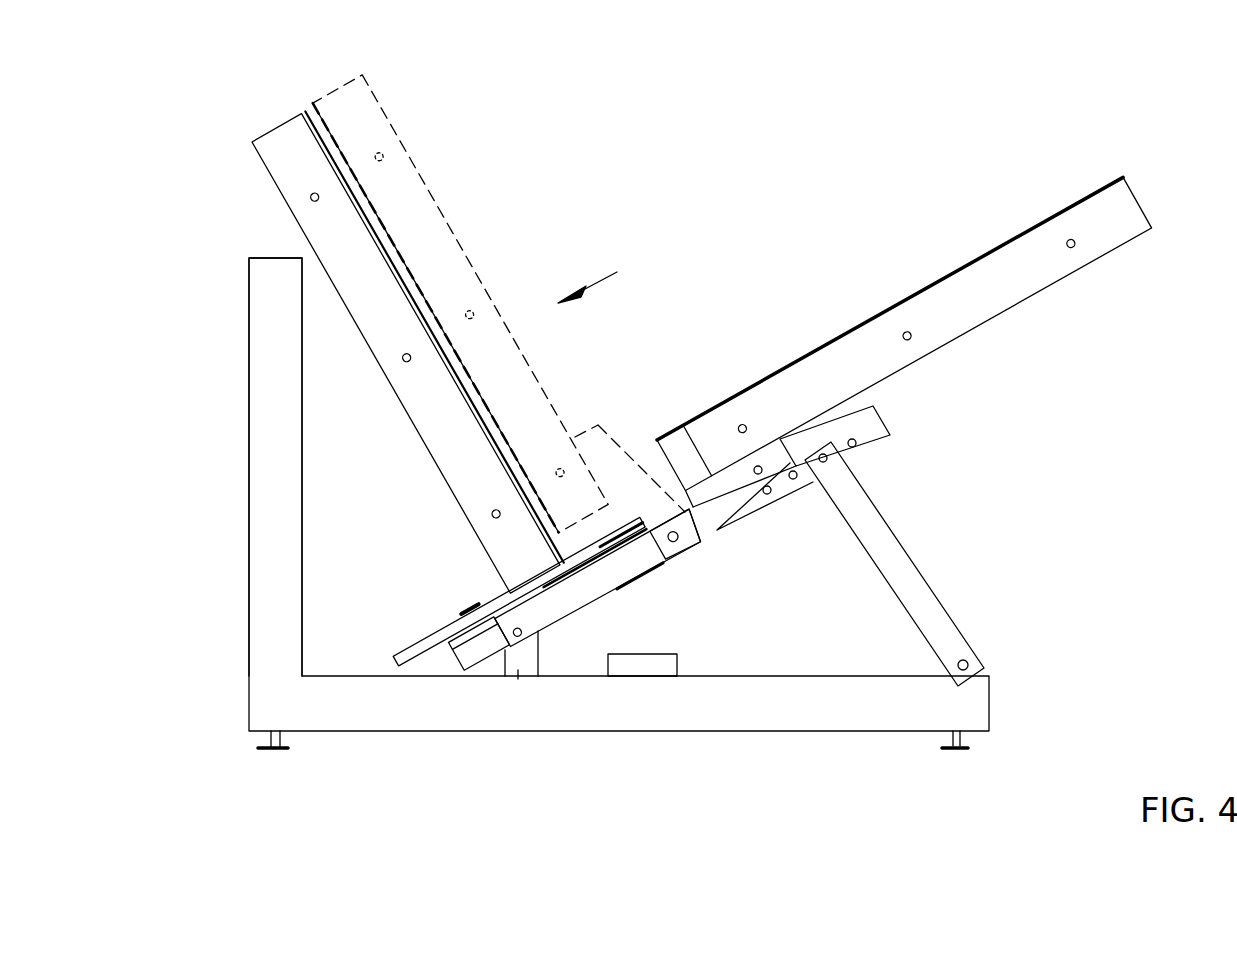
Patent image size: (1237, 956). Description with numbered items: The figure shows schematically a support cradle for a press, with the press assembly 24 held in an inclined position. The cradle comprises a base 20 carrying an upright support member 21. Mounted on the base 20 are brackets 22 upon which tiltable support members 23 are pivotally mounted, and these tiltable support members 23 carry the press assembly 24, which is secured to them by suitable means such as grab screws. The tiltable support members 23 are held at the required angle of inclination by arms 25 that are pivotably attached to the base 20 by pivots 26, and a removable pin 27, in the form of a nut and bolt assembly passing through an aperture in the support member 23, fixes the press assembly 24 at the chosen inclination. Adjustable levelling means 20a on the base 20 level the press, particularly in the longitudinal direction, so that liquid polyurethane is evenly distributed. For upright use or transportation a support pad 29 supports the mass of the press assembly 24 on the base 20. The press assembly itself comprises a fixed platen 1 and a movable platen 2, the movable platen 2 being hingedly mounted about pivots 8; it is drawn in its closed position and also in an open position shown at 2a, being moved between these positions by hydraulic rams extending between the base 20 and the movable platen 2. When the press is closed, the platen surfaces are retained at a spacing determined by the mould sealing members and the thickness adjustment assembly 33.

The fixed platen 1 is at (283, 140).
The movable platen 2 is at (398, 140).
The open position of movable platen 2a is at (1127, 200).
The pivots 8 is at (675, 546).
The base 20 is at (782, 717).
The adjustable levelling means 20a is at (274, 752).
The upright support member 21 is at (249, 598).
The brackets 22 is at (517, 678).
The tiltable support members 23 is at (873, 423).
The press assembly 24 is at (610, 272).
The arms 25 is at (914, 581).
The pivots 26 is at (972, 653).
The removable pin 27 is at (833, 458).
The support pad 29 is at (643, 677).
The thickness adjustment assembly 33 is at (412, 618).